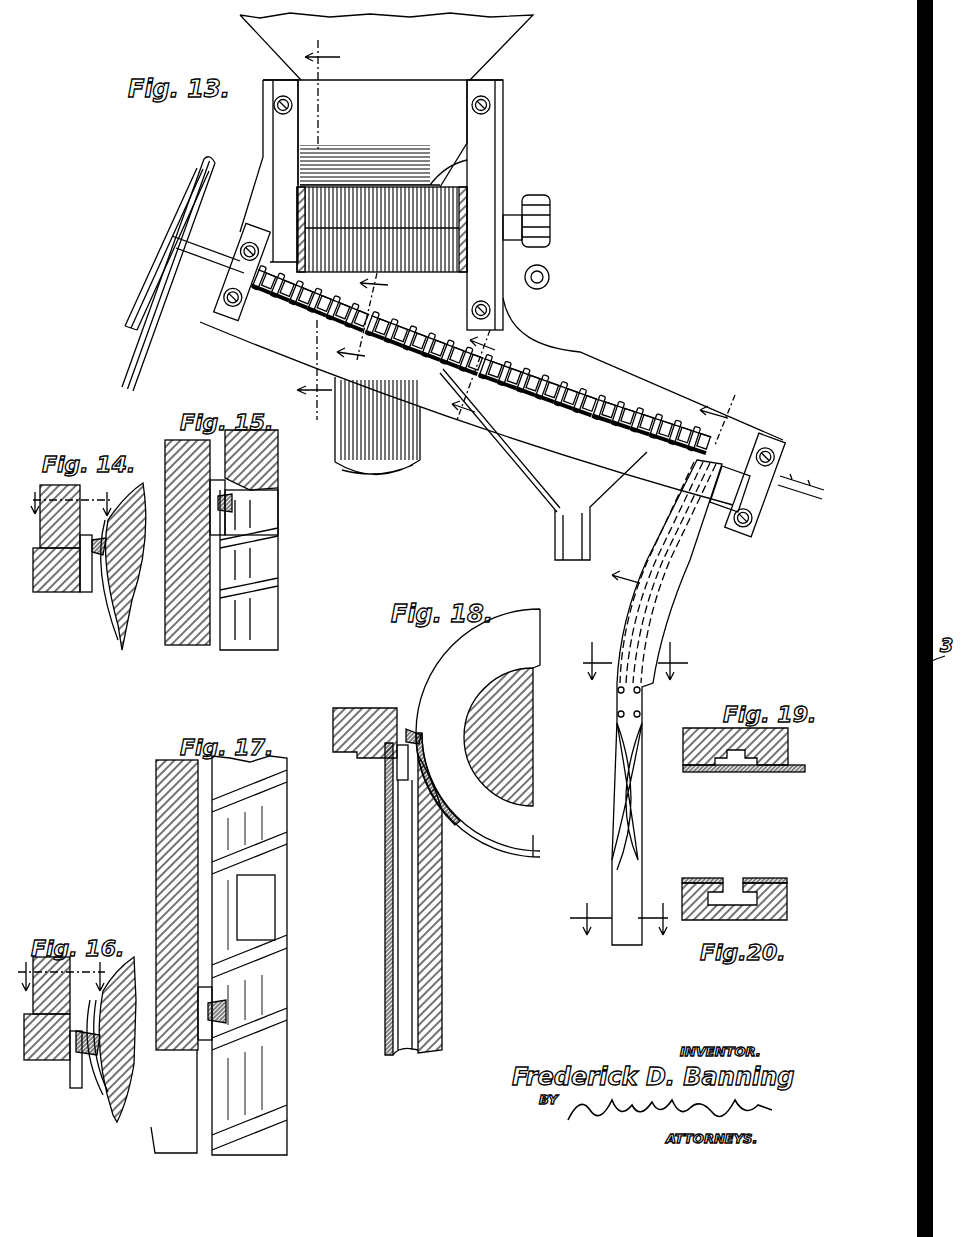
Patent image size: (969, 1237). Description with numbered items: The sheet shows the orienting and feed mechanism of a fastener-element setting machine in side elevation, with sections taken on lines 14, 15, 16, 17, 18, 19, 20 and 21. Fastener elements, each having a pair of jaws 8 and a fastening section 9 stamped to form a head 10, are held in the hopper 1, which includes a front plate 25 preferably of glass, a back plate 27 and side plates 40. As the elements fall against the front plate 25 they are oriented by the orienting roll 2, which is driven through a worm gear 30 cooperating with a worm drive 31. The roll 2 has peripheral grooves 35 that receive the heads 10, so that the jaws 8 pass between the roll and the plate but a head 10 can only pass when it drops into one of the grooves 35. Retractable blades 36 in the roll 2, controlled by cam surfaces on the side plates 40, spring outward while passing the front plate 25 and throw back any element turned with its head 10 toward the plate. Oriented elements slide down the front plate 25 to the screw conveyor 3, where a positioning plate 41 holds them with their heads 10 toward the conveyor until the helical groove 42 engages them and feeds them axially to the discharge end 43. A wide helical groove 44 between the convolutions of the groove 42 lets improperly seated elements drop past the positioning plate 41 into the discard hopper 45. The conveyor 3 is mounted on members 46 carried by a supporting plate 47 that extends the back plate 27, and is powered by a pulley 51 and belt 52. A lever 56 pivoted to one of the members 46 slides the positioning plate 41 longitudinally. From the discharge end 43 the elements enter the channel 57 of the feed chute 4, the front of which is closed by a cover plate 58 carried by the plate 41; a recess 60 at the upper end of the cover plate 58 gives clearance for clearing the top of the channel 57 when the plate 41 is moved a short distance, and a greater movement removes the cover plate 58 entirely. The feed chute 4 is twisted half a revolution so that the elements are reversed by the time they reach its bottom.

In FIG. 13, the hopper 1 is at (450, 142).
In FIG. 13, the orienting roll 2 is at (420, 228).
In FIG. 13, the screw conveyor 3 is at (655, 415).
In FIG. 14, the screw conveyor 3 is at (124, 648).
In FIG. 15, the screw conveyor 3 is at (270, 628).
In FIG. 16, the screw conveyor 3 is at (122, 1088).
In FIG. 17, the screw conveyor 3 is at (283, 838).
In FIG. 18, the screw conveyor 3 is at (530, 798).
In FIG. 13, the feed chute 4 is at (668, 622).
In FIG. 18, the feed chute 4 is at (443, 906).
In FIG. 20, the feed chute 4 is at (775, 909).
In FIG. 15, the jaws 8 is at (270, 535).
In FIG. 17, the jaws 8 is at (216, 990).
In FIG. 14, the fastening section 9 is at (86, 592).
In FIG. 15, the fastening section 9 is at (236, 522).
In FIG. 16, the fastening section 9 is at (76, 1059).
In FIG. 17, the fastening section 9 is at (204, 1040).
In FIG. 14, the head 10 is at (97, 540).
In FIG. 15, the head 10 is at (255, 500).
In FIG. 16, the head 10 is at (88, 1056).
In FIG. 17, the head 10 is at (224, 1010).
In FIG. 18, the head 10 is at (421, 732).
In FIG. 13, the section line 14— 14 is at (375, 327).
In FIG. 14, the section line 15— 15 is at (78, 494).
In FIG. 13, the section line 16— 16 is at (482, 380).
In FIG. 16, the section line 17— 17 is at (60, 987).
In FIG. 13, the section line 18— 18 is at (681, 497).
In FIG. 13, the section line 19— 19 is at (634, 661).
In FIG. 13, the section line 20— 20 is at (619, 917).
In FIG. 13, the section line 21— 21 is at (358, 255).
In FIG. 13, the front plate 25 is at (400, 100).
In FIG. 14, the front plate 25 is at (52, 580).
In FIG. 16, the front plate 25 is at (42, 1060).
In FIG. 13, the back plate 27 is at (503, 96).
In FIG. 13, the worm gear 30 is at (548, 215).
In FIG. 13, the worm drive 31 is at (549, 275).
In FIG. 13, the peripheral grooves 35 is at (428, 182).
In FIG. 13, the retractable blades 36 is at (350, 228).
In FIG. 13, the side plates 40 is at (483, 160).
In FIG. 13, the positioning plate 41 is at (555, 392).
In FIG. 14, the positioning plate 41 is at (60, 585).
In FIG. 15, the positioning plate 41 is at (187, 542).
In FIG. 16, the positioning plate 41 is at (60, 1062).
In FIG. 17, the positioning plate 41 is at (180, 1125).
In FIG. 18, the positioning plate 41 is at (392, 710).
In FIG. 13, the helical groove 42 is at (388, 320).
In FIG. 15, the helical groove 42 is at (265, 585).
In FIG. 17, the helical groove 42 is at (276, 806).
In FIG. 13, the discharge end 43 is at (745, 448).
In FIG. 18, the discharge end 43 is at (421, 741).
In FIG. 13, the wide helical groove 44 is at (515, 372).
In FIG. 16, the wide helical groove 44 is at (100, 1000).
In FIG. 17, the wide helical groove 44 is at (252, 918).
In FIG. 13, the discard hopper 45 is at (550, 490).
In FIG. 13, the members 46 is at (230, 283).
In FIG. 13, the supporting plate 47 is at (622, 370).
In FIG. 13, the pulley 51 is at (172, 228).
In FIG. 13, the belt 52 is at (135, 358).
In FIG. 13, the lever 56 is at (808, 472).
In FIG. 13, the channel 57 is at (672, 540).
In FIG. 18, the channel 57 is at (400, 862).
In FIG. 19, the channel 57 is at (722, 772).
In FIG. 20, the channel 57 is at (732, 888).
In FIG. 13, the cover plate 58 is at (677, 592).
In FIG. 18, the cover plate 58 is at (386, 910).
In FIG. 19, the cover plate 58 is at (765, 773).
In FIG. 13, the recess 60 is at (725, 495).